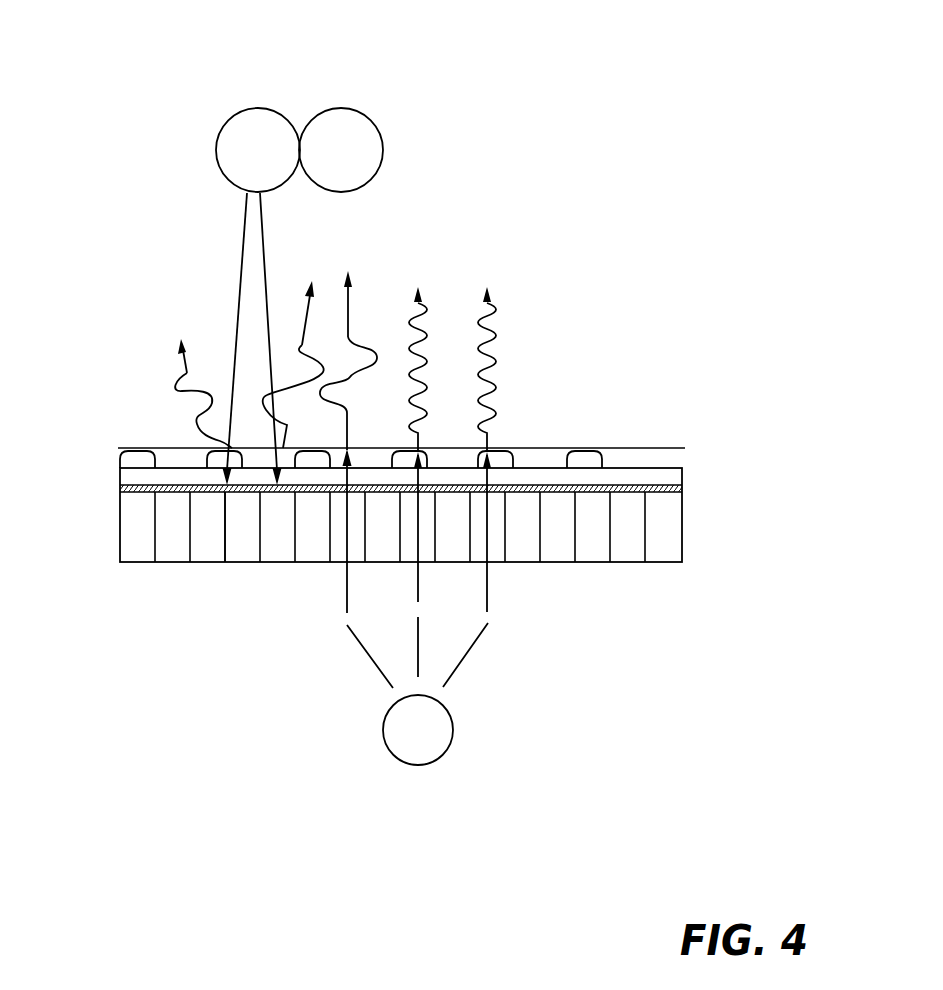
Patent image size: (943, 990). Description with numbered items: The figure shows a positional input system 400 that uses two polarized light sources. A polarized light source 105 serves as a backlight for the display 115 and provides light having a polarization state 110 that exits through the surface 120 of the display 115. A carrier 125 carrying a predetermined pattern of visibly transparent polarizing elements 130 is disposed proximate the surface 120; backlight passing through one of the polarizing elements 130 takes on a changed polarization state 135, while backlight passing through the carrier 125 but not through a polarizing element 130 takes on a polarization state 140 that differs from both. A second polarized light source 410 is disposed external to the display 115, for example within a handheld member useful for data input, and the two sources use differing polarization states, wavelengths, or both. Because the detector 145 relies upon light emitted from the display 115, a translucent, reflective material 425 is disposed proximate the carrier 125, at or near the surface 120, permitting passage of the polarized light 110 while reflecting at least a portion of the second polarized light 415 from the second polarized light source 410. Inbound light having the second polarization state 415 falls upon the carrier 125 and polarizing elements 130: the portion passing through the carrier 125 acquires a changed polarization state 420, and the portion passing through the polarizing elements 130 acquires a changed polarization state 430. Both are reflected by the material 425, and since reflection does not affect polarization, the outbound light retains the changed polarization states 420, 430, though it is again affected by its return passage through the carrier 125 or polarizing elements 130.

The positional input system 400 is at (147, 39).
The polarized light source 105 is at (455, 735).
The polarization state 110 is at (487, 580).
The display 115 is at (680, 538).
The surface 120 is at (242, 492).
The carrier 125 is at (185, 460).
The polarizing elements 130 is at (498, 450).
The changed polarization state 135 is at (495, 318).
The polarization state 140 is at (360, 335).
The detector 145 is at (382, 135).
The second polarized light source 410 is at (255, 108).
The second polarization state 415 is at (242, 260).
The changed polarization state 420 is at (307, 343).
The translucent reflective material 425 is at (638, 485).
The changed polarization state 430 is at (177, 375).